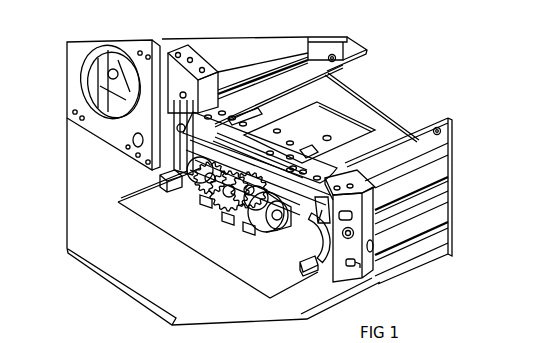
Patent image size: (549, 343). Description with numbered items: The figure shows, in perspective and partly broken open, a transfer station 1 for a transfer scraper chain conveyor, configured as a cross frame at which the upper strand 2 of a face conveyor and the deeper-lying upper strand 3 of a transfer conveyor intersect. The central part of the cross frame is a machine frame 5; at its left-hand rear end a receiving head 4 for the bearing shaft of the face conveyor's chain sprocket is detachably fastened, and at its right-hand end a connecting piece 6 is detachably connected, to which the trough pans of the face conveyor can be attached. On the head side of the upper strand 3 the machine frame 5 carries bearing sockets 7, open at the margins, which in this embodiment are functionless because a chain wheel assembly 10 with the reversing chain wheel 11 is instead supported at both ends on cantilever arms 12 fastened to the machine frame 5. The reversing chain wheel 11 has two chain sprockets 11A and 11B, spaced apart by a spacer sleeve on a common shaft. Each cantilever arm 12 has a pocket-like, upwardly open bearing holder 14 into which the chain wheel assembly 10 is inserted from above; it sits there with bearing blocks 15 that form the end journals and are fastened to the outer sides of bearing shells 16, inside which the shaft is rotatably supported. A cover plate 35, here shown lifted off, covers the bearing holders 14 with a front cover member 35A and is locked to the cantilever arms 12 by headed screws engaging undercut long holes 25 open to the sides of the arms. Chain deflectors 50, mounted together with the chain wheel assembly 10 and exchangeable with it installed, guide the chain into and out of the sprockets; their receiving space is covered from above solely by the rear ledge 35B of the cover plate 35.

The transfer station 1 is at (394, 77).
The upper strand of the face conveyor 2 is at (420, 184).
The upper strand of the transfer conveyor 3 is at (335, 128).
The receiving head 4 is at (107, 48).
The machine frame 5 is at (344, 72).
The connecting piece 6 is at (374, 262).
The bearing sockets 7 is at (318, 270).
The chain wheel assembly 10 is at (233, 229).
The reversing chain wheel 11 is at (206, 222).
The chain sprocket 11A is at (197, 209).
The chain sprocket 11B is at (225, 227).
The cantilever arms 12 is at (180, 189).
The bearing holders 14 is at (275, 235).
The bearing blocks 15 is at (283, 240).
The bearing shells 16 is at (189, 148).
The undercut long holes 25 is at (308, 240).
The cover plate 35 is at (276, 138).
The front cover member 35A is at (307, 158).
The rear ledge 35B is at (284, 94).
The chain deflectors 50 is at (240, 122).